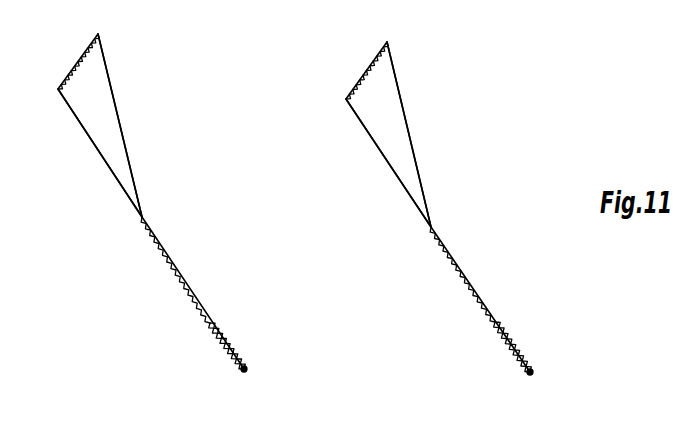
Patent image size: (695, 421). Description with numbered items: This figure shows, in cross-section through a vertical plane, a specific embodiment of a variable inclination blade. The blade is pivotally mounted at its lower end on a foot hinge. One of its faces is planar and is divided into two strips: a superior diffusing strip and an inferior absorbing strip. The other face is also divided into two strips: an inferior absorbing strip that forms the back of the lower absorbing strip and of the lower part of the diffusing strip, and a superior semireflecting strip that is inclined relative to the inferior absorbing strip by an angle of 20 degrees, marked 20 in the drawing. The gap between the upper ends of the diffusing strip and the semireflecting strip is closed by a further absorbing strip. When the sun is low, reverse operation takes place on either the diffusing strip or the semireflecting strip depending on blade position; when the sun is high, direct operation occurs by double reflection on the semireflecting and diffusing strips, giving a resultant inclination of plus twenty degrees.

The apex angle 20 degrees 20 is at (115, 149).